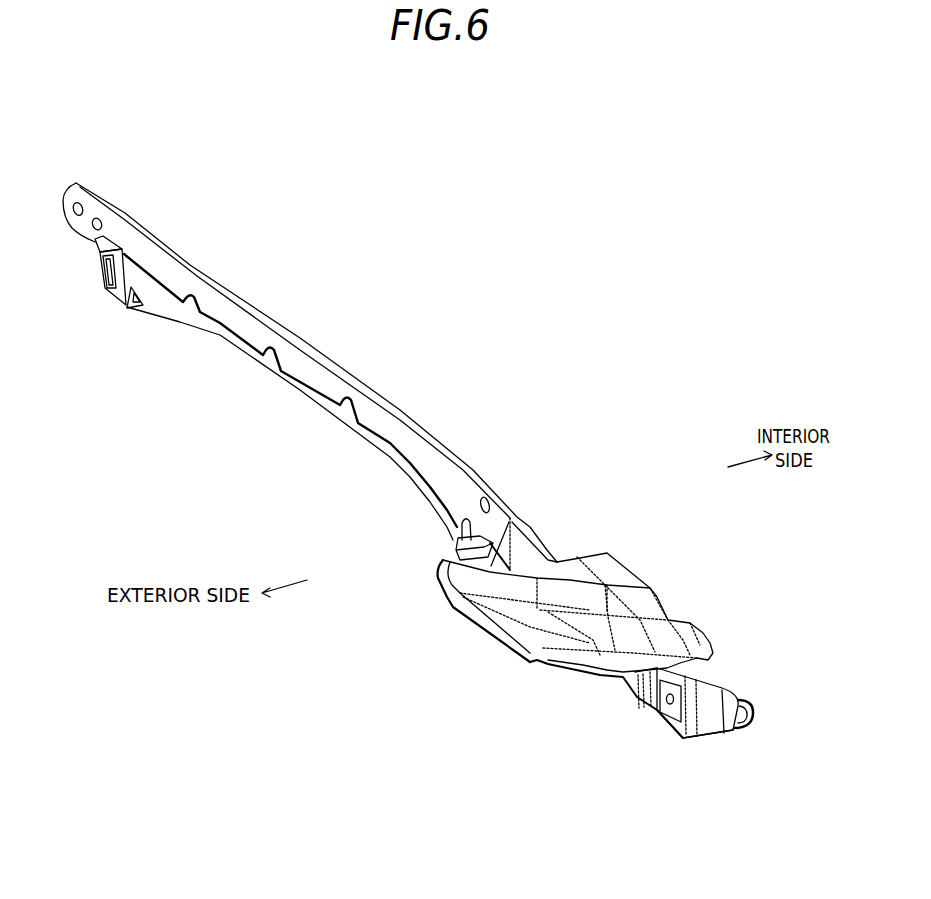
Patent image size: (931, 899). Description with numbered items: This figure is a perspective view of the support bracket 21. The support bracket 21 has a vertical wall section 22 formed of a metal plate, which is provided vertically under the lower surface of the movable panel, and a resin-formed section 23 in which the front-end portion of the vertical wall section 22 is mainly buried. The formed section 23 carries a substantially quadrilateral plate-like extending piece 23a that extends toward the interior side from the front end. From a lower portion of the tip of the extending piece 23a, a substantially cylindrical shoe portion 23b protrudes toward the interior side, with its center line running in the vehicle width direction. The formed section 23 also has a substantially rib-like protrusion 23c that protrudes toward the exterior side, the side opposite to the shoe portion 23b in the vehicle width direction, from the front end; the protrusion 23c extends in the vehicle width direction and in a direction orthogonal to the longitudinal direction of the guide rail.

The support bracket 21 is at (310, 376).
The vertical wall section 22 is at (312, 360).
The formed section 23 is at (647, 710).
The extending piece 23a is at (722, 728).
The shoe portion 23b is at (752, 713).
The protrusion 23c is at (684, 738).